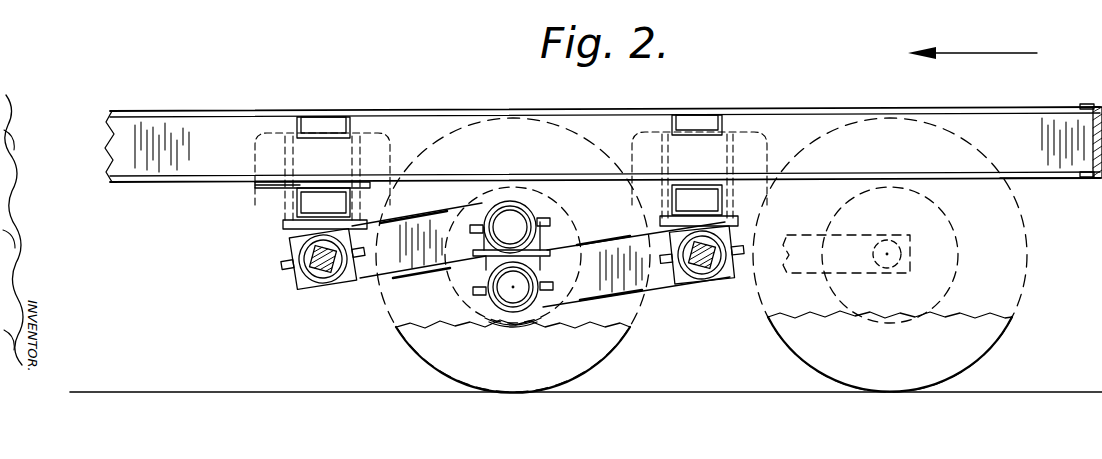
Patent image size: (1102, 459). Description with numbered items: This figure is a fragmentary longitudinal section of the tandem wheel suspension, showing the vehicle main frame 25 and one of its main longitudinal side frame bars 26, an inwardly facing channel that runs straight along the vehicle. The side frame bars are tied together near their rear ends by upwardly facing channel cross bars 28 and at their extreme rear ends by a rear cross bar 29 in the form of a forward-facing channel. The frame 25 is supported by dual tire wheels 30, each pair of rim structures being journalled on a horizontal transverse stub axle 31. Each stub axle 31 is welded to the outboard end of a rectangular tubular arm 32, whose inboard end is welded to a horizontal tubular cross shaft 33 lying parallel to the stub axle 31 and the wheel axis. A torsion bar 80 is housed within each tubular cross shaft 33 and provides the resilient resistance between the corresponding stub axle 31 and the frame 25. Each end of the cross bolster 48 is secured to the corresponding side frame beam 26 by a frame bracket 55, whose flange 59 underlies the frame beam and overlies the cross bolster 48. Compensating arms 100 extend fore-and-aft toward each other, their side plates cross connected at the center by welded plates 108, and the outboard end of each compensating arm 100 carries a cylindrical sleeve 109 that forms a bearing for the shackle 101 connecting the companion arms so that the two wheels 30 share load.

The main frame 25 is at (1065, 103).
The main longitudinal side frame bar 26 is at (217, 110).
The cross bar 28 is at (328, 117).
The rear cross bar 29 is at (1082, 182).
The dual tire wheel 30 is at (439, 357).
The stub axle 31 is at (894, 236).
The arm 32 is at (814, 232).
The tubular cross shaft 33 is at (314, 298).
The cross bolster 48 is at (345, 188).
The frame bracket 55 is at (248, 187).
The flange 59 is at (264, 194).
The torsion bar 80 is at (302, 266).
The compensating arm 100 is at (368, 292).
The shackle 101 is at (561, 235).
The cross connecting plate 108 is at (436, 208).
The cylindrical sleeve 109 is at (520, 248).